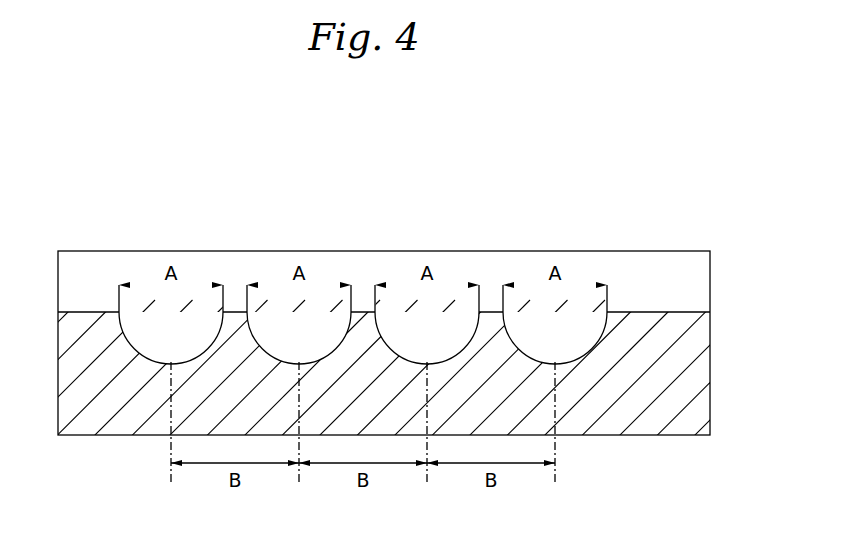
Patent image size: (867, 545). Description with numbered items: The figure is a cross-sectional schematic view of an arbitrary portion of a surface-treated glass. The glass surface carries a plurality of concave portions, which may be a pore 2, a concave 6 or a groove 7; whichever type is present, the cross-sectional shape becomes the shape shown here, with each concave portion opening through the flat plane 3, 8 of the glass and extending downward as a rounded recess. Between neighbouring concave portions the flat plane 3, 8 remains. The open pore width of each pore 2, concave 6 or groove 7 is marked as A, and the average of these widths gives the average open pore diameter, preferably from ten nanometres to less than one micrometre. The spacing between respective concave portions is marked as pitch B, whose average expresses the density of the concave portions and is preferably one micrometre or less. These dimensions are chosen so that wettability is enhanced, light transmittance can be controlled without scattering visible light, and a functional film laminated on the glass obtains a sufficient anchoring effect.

The pore 2 is at (388, 396).
The flat plane 3 is at (433, 306).
The concave 6 is at (388, 396).
The groove 7 is at (586, 363).
The flat plane 8 is at (662, 313).